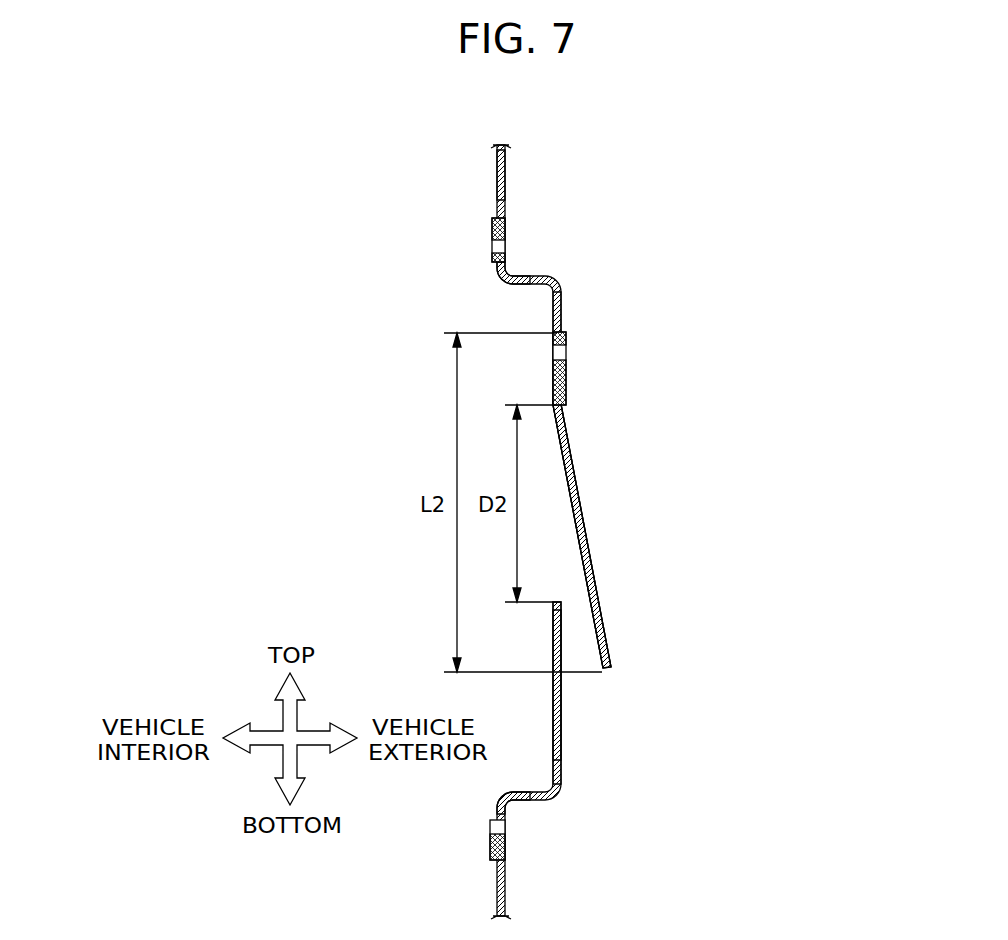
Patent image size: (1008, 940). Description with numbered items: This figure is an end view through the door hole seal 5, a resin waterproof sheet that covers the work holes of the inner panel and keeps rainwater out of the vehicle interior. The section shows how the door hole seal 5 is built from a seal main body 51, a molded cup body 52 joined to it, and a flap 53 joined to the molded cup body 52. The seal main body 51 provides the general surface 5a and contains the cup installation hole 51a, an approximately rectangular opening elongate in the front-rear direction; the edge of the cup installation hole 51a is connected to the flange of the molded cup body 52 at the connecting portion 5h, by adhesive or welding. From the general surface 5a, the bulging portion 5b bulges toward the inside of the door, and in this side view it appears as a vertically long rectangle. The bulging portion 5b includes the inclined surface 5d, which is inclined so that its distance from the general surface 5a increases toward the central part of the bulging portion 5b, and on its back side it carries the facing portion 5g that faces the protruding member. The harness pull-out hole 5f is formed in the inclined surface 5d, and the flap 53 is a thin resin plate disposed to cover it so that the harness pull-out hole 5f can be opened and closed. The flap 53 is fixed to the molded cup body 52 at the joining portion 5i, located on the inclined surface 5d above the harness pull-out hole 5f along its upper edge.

The door hole seal 5 is at (670, 536).
The general surface 5a is at (506, 180).
The bulging portion 5b is at (620, 539).
The inclined surface 5d is at (562, 719).
The harness pull-out hole 5f is at (553, 571).
The facing portion 5g is at (505, 832).
The connecting portion 5h is at (505, 249).
The joining portion 5i is at (567, 353).
The seal main body 51 is at (506, 206).
The cup installation hole 51a is at (497, 264).
The molded cup body 52 is at (561, 316).
The flap 53 is at (583, 494).